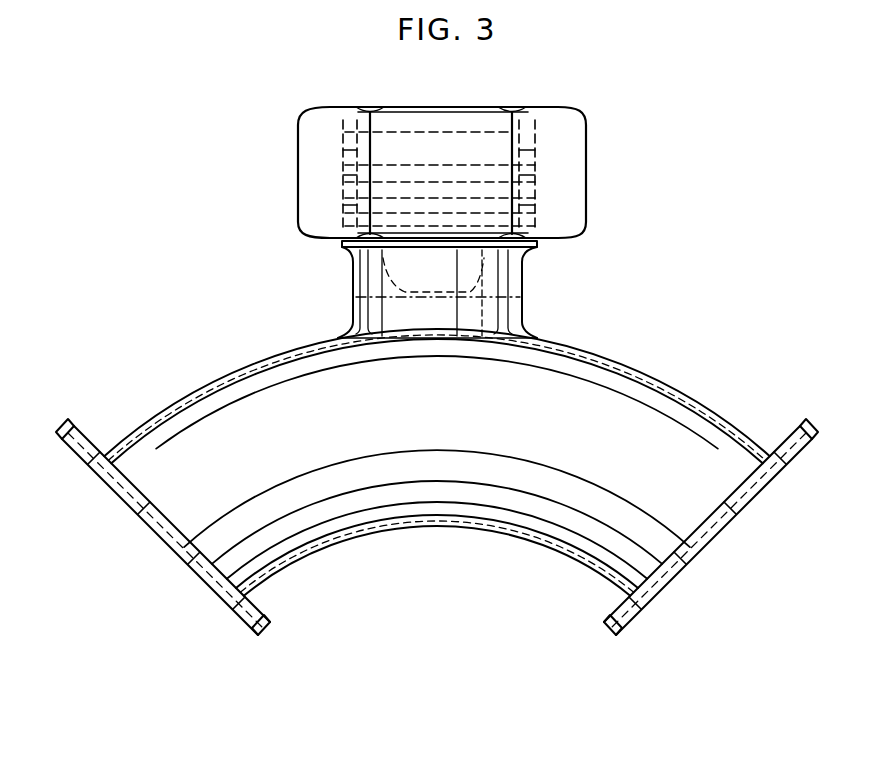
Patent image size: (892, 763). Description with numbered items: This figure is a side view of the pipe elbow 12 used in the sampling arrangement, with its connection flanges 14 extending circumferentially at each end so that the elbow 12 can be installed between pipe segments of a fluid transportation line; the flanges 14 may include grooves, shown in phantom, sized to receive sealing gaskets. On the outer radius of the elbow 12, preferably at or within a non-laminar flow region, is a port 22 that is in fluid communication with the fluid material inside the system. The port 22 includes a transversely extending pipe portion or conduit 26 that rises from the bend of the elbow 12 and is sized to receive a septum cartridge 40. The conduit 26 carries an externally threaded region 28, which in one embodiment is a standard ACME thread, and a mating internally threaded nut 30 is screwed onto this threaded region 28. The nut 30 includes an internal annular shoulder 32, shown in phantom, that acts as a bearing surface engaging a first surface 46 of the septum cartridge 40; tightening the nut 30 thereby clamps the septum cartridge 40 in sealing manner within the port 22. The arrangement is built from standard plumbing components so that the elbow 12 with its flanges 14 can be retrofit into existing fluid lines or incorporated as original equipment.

The elbow 12 is at (707, 213).
The connection flanges 14 is at (90, 458).
The port 22 is at (462, 337).
The conduit 26 is at (353, 301).
The externally threaded region 28 is at (560, 178).
The internally threaded nut 30 is at (583, 124).
The internal annular shoulder 32 is at (350, 128).
The septum cartridge 40 is at (478, 152).
The first surface 46 is at (425, 130).